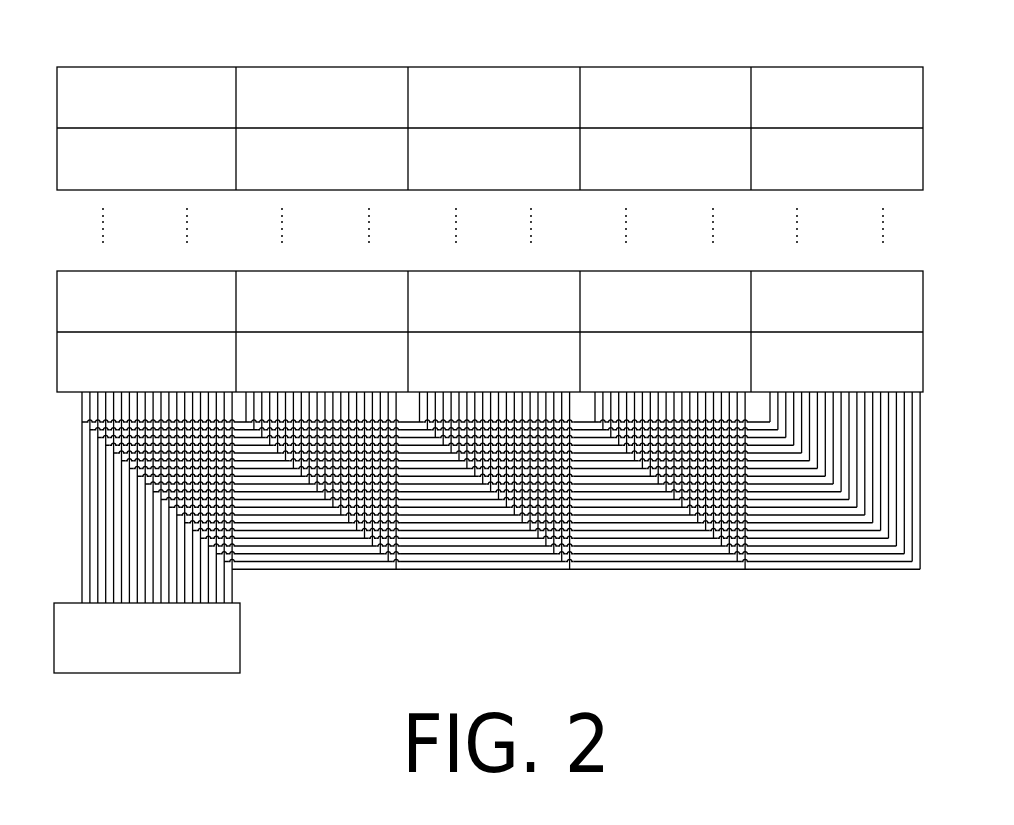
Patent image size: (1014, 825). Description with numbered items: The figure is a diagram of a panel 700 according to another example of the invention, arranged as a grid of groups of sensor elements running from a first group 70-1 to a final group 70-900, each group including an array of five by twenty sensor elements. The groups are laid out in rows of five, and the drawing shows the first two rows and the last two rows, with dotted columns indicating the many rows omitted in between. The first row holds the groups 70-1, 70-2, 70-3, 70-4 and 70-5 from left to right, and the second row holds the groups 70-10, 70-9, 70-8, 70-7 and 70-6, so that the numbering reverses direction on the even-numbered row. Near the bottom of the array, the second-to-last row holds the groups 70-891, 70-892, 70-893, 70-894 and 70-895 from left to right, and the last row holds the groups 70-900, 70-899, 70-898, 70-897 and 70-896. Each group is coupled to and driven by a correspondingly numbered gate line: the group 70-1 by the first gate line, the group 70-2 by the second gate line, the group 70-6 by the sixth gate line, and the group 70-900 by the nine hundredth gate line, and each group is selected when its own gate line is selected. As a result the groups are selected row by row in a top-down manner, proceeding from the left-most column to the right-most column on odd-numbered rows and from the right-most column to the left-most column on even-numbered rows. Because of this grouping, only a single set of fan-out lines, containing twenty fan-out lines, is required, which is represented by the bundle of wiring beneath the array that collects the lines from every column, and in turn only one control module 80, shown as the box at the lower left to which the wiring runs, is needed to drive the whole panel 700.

The panel 700 is at (47, 22).
The control module 80 is at (70, 603).
The group of sensor elements 70-1 is at (146, 97).
The group of sensor elements 70-2 is at (322, 97).
The group of sensor elements 70-3 is at (494, 97).
The group of sensor elements 70-4 is at (665, 97).
The group of sensor elements 70-5 is at (837, 97).
The group of sensor elements 70-6 is at (837, 159).
The group of sensor elements 70-7 is at (665, 159).
The group of sensor elements 70-8 is at (494, 159).
The group of sensor elements 70-9 is at (322, 159).
The group of sensor elements 70-10 is at (146, 159).
The group of sensor elements 70-891 is at (146, 301).
The group of sensor elements 70-892 is at (322, 301).
The group of sensor elements 70-893 is at (494, 301).
The group of sensor elements 70-894 is at (665, 301).
The group of sensor elements 70-895 is at (837, 301).
The group of sensor elements 70-896 is at (837, 362).
The group of sensor elements 70-897 is at (665, 362).
The group of sensor elements 70-898 is at (494, 362).
The group of sensor elements 70-899 is at (322, 362).
The group of sensor elements 70-900 is at (146, 362).